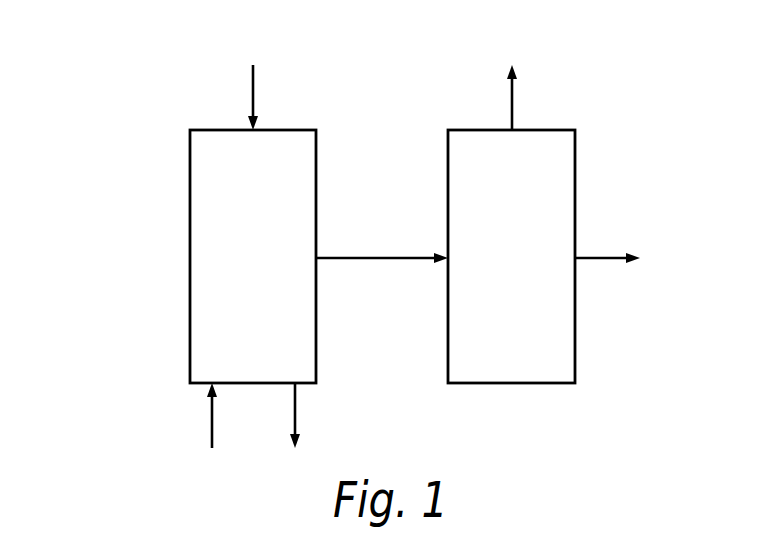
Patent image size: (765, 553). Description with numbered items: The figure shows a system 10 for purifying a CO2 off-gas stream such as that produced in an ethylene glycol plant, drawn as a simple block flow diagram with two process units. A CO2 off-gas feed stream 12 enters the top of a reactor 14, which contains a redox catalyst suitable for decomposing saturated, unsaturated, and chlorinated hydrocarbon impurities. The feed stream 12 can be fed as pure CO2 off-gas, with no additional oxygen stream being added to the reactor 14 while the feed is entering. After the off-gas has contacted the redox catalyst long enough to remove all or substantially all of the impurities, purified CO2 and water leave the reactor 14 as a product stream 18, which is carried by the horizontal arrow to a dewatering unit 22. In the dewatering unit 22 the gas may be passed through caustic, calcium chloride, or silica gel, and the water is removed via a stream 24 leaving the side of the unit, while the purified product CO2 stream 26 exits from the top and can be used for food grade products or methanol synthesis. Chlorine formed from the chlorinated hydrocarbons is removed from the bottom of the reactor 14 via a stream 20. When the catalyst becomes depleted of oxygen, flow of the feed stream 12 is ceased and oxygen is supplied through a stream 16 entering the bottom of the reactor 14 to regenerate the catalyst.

The process system 10 is at (138, 87).
The CO2 off-gas feed stream 12 is at (253, 102).
The reactor 14 is at (190, 309).
The oxygen stream 16 is at (212, 422).
The product stream 18 is at (378, 258).
The chlorine stream 20 is at (295, 415).
The dewatering unit 22 is at (575, 332).
The water stream 24 is at (602, 254).
The purified product CO2 stream 26 is at (512, 103).